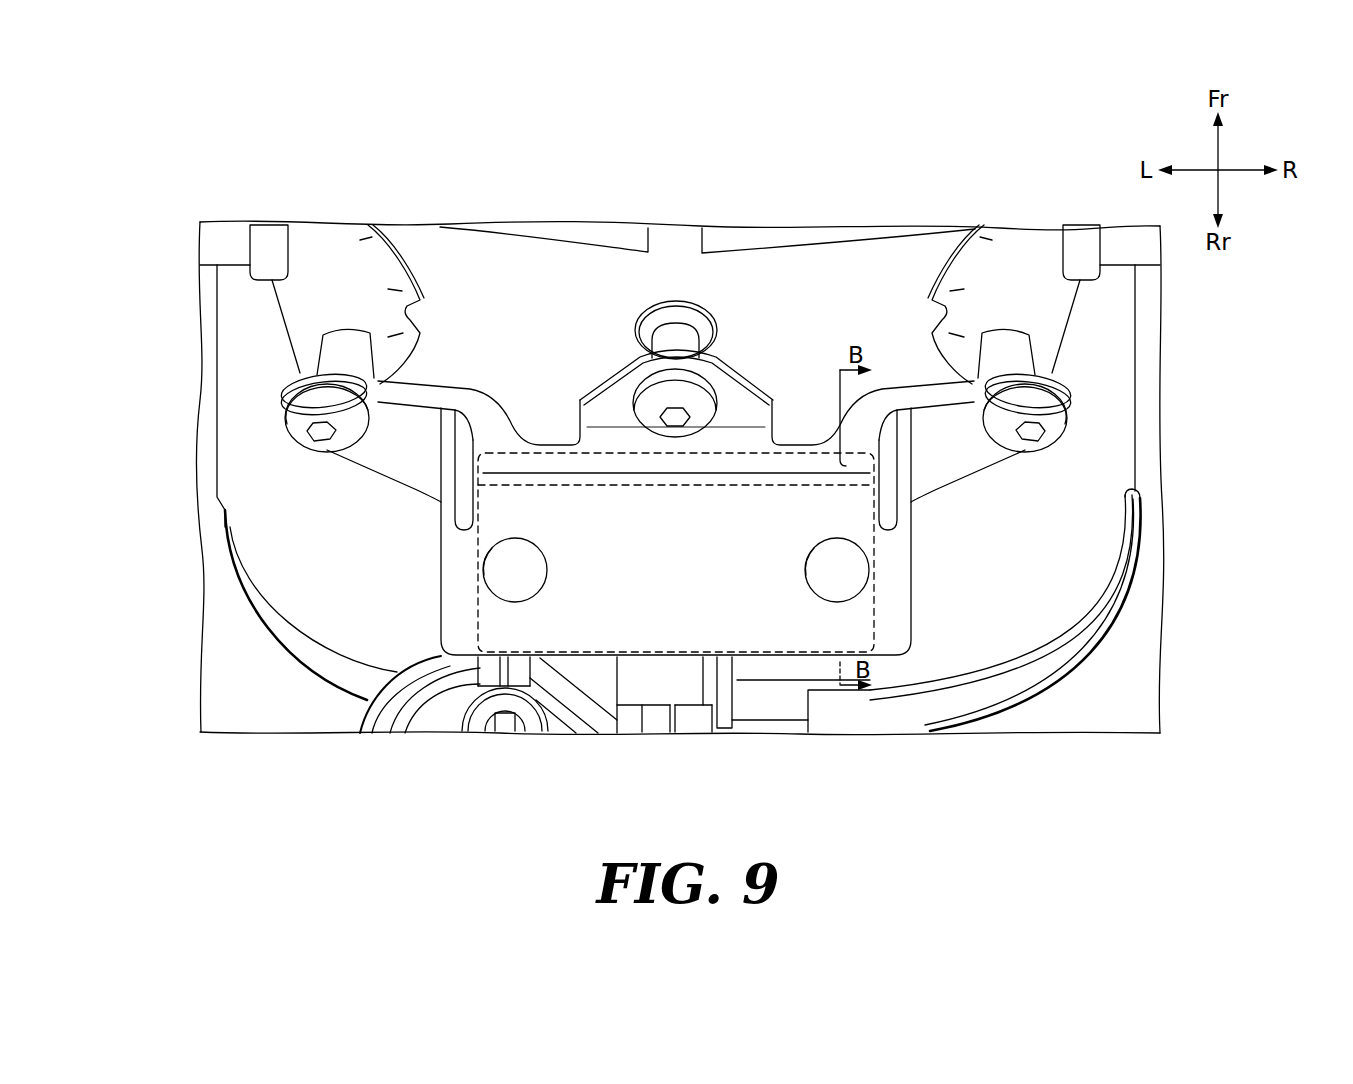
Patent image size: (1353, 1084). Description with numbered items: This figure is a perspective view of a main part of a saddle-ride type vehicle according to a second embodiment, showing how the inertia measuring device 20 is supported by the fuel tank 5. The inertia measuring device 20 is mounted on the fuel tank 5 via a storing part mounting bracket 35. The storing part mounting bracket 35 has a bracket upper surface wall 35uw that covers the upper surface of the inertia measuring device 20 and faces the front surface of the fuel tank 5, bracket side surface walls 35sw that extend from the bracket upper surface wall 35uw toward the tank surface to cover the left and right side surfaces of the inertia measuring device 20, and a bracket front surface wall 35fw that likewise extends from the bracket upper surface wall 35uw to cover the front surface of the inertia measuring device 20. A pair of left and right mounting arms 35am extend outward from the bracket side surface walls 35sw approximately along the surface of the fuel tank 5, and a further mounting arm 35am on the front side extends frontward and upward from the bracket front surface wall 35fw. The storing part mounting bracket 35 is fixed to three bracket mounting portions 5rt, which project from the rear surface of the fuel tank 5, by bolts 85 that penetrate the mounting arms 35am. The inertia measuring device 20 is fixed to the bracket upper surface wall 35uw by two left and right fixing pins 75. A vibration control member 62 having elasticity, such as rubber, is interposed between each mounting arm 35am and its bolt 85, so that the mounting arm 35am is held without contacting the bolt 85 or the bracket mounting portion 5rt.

The fuel tank 5 is at (1043, 543).
The bracket mounting portion 5rt is at (343, 345).
The inertia measuring device 20 is at (875, 625).
The storing part mounting bracket 35 is at (912, 613).
The mounting arm 35am is at (388, 460).
The bracket front surface wall 35fw is at (635, 442).
The bracket side surface wall 35sw is at (440, 577).
The bracket upper surface wall 35uw is at (580, 623).
The vibration control member 62 is at (287, 382).
The fixing pin 75 is at (510, 578).
The bolt 85 is at (300, 422).